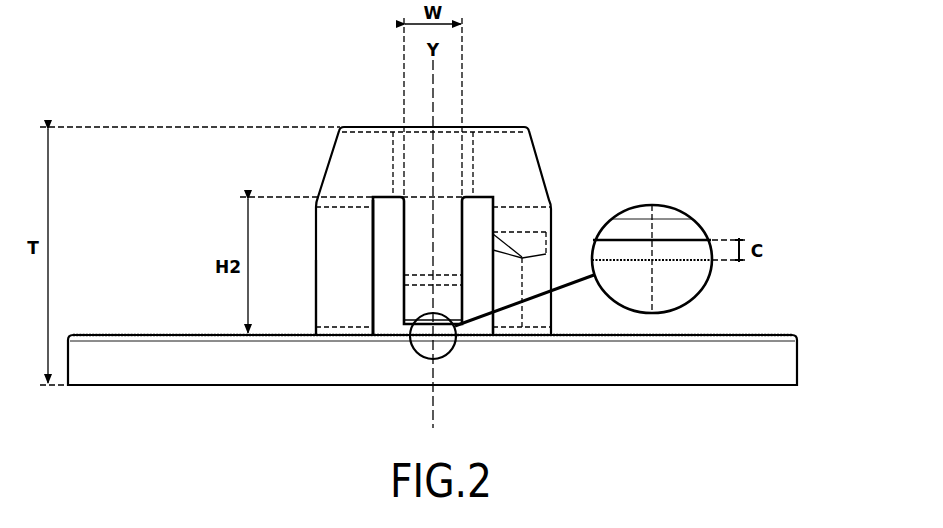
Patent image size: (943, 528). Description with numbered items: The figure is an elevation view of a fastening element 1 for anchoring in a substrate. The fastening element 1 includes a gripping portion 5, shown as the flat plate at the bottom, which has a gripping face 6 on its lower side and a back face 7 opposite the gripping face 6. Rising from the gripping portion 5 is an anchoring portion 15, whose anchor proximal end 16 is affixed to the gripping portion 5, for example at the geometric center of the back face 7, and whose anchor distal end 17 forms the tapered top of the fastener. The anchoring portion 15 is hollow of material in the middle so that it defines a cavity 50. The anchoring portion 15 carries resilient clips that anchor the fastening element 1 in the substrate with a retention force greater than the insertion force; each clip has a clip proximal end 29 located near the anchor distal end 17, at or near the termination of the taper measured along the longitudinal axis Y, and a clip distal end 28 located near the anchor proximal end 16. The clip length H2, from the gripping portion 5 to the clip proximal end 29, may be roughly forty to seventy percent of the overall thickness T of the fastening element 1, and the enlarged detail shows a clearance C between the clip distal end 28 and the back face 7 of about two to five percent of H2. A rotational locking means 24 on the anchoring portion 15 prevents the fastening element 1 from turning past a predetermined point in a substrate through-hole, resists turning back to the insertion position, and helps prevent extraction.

The fastening element 1 is at (640, 68).
The gripping portion 5 is at (562, 400).
The gripping face 6 is at (649, 387).
The back face 7 is at (712, 336).
The anchoring portion 15 is at (553, 156).
The anchor proximal end 16 is at (314, 333).
The anchor distal end 17 is at (490, 117).
The rotational locking means 24 is at (549, 242).
The clip distal end 28 is at (659, 219).
The clip proximal end 29 is at (467, 200).
The cavity 50 is at (383, 210).